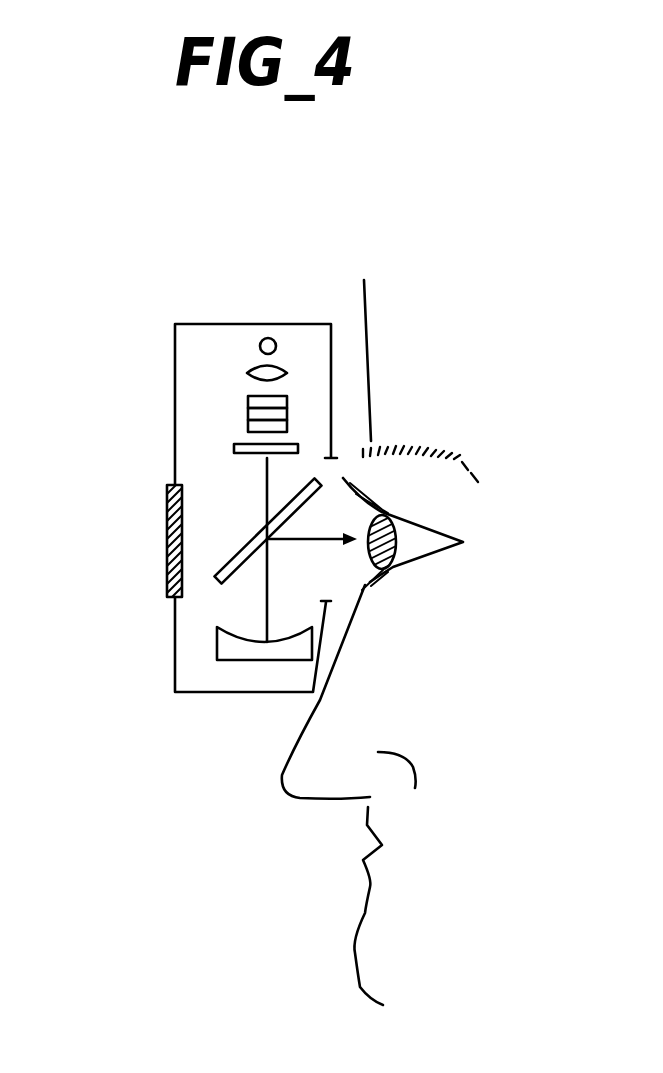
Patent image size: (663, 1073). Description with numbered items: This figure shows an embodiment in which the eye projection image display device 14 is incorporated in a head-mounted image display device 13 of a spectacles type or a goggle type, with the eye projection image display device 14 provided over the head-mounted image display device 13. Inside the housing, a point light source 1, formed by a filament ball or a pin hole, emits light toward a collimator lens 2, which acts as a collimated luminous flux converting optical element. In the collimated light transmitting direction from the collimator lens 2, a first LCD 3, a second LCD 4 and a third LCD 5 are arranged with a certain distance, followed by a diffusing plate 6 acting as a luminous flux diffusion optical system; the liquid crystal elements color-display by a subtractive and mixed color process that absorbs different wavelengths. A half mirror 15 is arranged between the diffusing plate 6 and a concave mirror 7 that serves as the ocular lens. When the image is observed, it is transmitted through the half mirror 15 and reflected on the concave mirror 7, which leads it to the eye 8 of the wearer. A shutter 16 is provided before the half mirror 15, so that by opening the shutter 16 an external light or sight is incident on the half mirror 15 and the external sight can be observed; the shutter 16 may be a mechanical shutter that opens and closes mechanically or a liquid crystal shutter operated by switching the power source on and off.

The point light source 1 is at (262, 338).
The collimator lens 2 is at (283, 366).
The first LCD 3 is at (287, 398).
The second LCD 4 is at (287, 408).
The third LCD 5 is at (287, 420).
The diffusing plate 6 is at (298, 450).
The concave mirror (ocular lens) 7 is at (232, 662).
The eye 8 is at (393, 560).
The head-mounted image display device 13 is at (239, 712).
The eye projection image display device 14 is at (220, 390).
The half mirror 15 is at (240, 543).
The shutter 16 is at (167, 510).